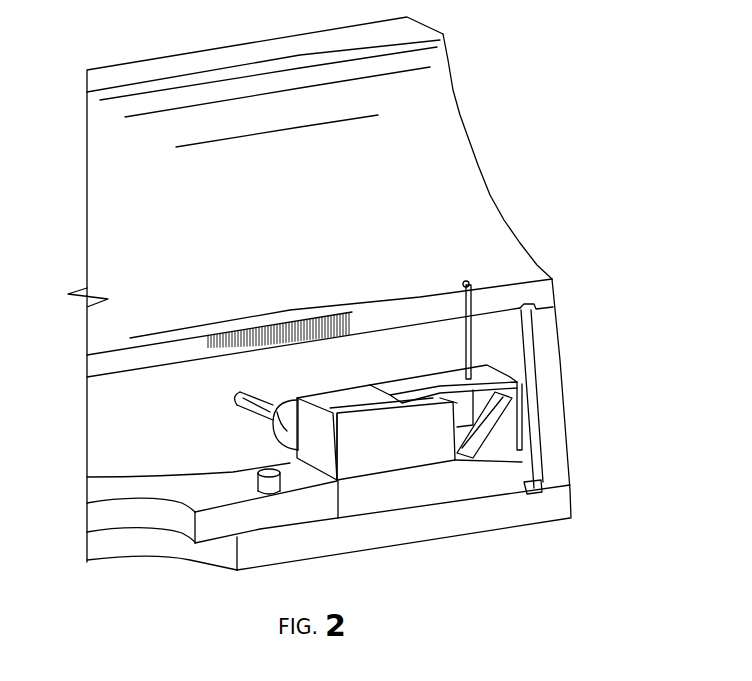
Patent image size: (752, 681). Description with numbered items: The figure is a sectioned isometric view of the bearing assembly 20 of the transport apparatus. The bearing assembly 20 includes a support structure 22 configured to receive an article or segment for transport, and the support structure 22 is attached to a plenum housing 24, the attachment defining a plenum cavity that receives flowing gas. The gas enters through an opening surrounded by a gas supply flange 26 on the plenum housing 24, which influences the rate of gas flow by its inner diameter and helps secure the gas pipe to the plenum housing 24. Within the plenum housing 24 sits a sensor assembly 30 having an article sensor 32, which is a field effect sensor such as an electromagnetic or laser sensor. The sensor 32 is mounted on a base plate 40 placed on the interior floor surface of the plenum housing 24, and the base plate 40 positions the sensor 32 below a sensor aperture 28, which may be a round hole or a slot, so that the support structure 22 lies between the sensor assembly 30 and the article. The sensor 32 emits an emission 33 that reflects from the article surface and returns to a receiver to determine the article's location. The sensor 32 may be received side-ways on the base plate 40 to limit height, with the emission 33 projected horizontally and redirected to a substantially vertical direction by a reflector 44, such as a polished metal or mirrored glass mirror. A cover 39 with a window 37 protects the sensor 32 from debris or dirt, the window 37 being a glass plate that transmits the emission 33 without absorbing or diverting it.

The bearing assembly 20 is at (57, 50).
The support structure 22 is at (127, 255).
The plenum housing 24 is at (105, 405).
The gas supply flange 26 is at (195, 490).
The sensor aperture 28 is at (467, 287).
The sensor assembly 30 is at (619, 428).
The article sensor 32 is at (395, 458).
The emission 33 is at (462, 337).
The window 37 is at (497, 367).
The cover 39 is at (347, 403).
The base plate 40 is at (380, 495).
The reflector 44 is at (510, 411).